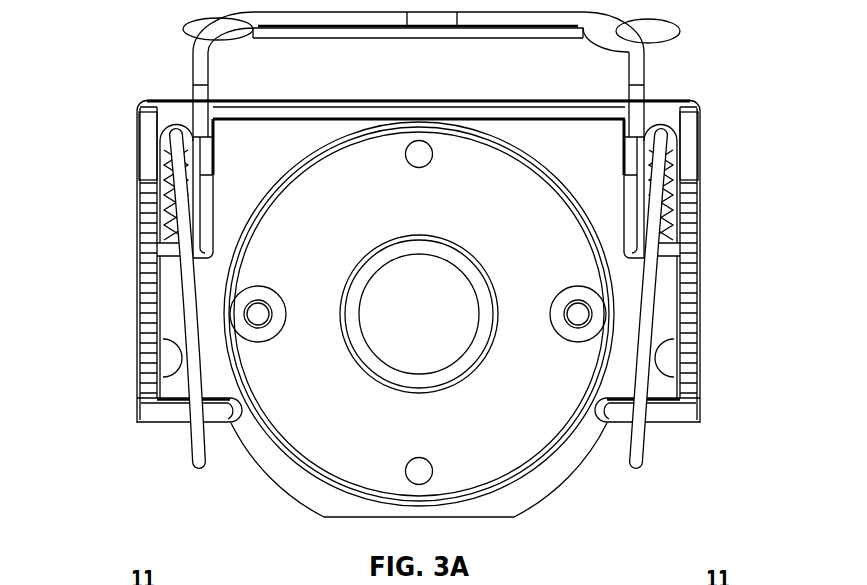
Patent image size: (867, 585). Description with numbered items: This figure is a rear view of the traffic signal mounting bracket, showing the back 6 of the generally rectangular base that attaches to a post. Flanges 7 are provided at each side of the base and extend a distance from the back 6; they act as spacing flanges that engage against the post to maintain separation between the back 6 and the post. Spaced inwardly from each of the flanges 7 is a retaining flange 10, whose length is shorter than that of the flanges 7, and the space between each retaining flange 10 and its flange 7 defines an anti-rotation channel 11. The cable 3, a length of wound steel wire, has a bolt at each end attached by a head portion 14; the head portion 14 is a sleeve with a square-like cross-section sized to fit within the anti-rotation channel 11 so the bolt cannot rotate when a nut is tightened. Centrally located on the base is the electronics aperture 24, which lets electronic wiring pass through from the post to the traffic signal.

The cable 3 is at (192, 433).
The back 6 is at (258, 459).
The flanges 7 is at (137, 273).
The retaining flange 10 is at (210, 173).
The anti-rotation channel 11 is at (166, 110).
The head portion 14 is at (167, 203).
The electronics aperture 24 is at (405, 325).